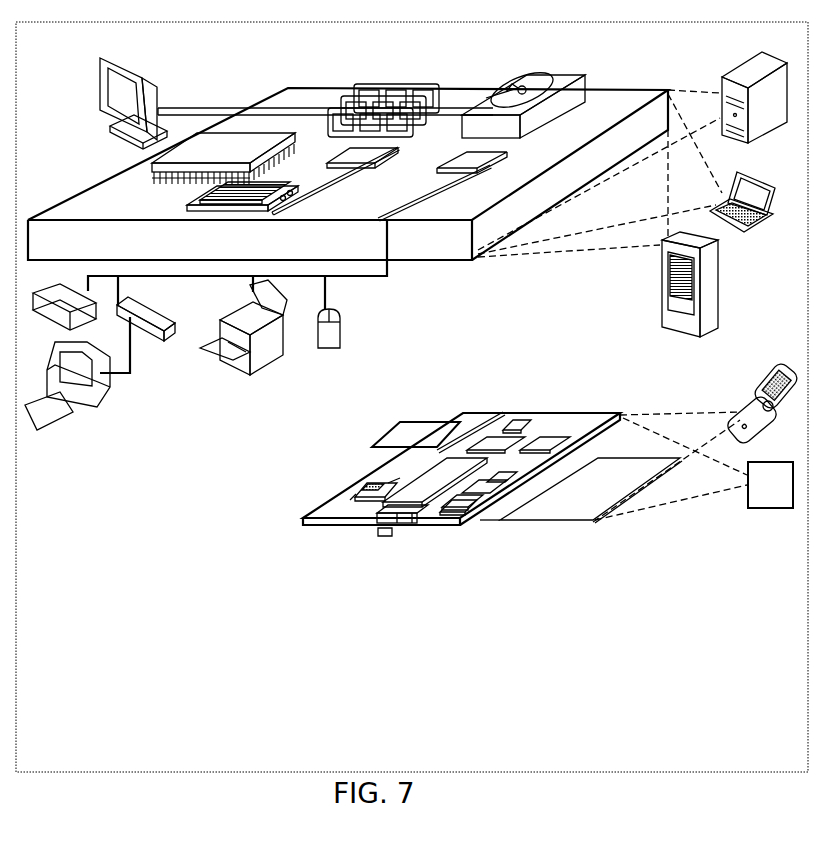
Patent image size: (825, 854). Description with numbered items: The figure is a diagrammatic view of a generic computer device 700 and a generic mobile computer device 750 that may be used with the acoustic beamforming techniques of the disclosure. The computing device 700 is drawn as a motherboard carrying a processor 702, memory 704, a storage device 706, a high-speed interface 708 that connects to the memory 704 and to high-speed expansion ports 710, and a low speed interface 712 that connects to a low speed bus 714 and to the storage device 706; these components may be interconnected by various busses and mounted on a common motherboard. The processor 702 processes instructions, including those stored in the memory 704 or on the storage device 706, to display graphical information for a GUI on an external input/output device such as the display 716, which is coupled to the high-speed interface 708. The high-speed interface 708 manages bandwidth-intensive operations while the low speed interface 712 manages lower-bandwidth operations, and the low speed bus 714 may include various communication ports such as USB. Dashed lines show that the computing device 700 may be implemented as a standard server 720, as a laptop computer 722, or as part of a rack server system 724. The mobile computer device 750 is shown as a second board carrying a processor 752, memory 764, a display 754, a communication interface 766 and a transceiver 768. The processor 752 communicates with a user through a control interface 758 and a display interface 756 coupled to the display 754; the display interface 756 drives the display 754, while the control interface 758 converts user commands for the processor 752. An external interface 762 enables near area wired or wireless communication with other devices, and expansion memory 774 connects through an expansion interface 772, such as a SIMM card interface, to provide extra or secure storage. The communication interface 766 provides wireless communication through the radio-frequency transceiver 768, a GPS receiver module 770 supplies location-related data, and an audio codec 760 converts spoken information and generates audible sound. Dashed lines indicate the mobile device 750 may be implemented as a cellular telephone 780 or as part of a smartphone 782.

The computing device 700 is at (233, 70).
The processor 702 is at (150, 170).
The memory 704 is at (370, 84).
The storage device 706 is at (520, 78).
The high-speed interface 708 is at (333, 152).
The high-speed expansion ports 710 is at (207, 197).
The low speed interface 712 is at (473, 157).
The low speed bus 714 is at (392, 221).
The display 716 is at (100, 60).
The standard server 720 is at (722, 80).
The laptop computer 722 is at (740, 173).
The rack server system 724 is at (662, 300).
The mobile computer device 750 is at (447, 396).
The processor 752 is at (417, 513).
The display 754 is at (595, 522).
The display interface 756 is at (470, 522).
The control interface 758 is at (493, 503).
The audio codec 760 is at (500, 507).
The external interface 762 is at (393, 528).
The memory 764 is at (362, 492).
The communication interface 766 is at (490, 438).
The transceiver 768 is at (545, 440).
The GPS receiver module 770 is at (520, 413).
The expansion interface 772 is at (444, 420).
The expansion memory 774 is at (395, 425).
The cellular telephone 780 is at (770, 374).
The smartphone 782 is at (757, 463).